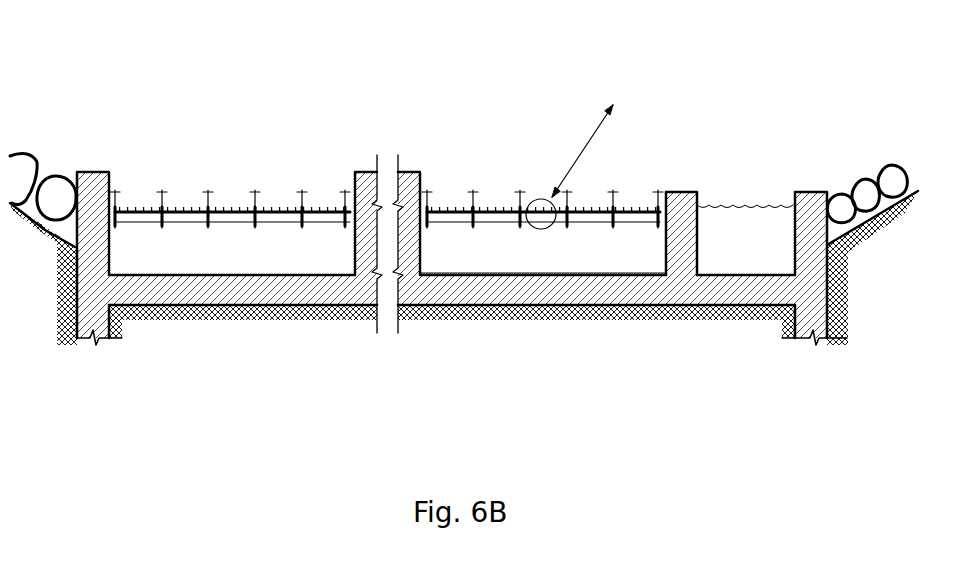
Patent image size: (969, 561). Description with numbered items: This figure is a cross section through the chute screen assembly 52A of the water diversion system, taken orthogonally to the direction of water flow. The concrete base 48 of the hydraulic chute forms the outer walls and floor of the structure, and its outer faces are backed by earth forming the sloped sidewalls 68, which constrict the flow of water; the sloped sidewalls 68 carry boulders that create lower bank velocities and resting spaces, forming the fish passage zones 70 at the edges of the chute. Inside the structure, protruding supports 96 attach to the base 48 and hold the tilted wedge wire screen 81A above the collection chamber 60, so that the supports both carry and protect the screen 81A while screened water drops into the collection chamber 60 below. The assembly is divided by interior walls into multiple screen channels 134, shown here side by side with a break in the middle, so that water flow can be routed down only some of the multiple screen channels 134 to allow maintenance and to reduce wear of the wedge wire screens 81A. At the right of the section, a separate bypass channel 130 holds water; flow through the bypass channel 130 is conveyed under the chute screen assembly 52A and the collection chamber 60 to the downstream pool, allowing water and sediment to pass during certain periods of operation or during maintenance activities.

The chute screen assembly 52A is at (413, 139).
The protruding supports 96 is at (647, 185).
The tilted wedge wire screen 81A is at (640, 206).
The fish passage zones 70 is at (76, 174).
The sloped sidewalls 68 is at (24, 216).
The base 48 is at (86, 300).
The multiple screen channels 134 is at (478, 276).
The collection chamber 60 is at (600, 263).
The bypass channel 130 is at (758, 236).